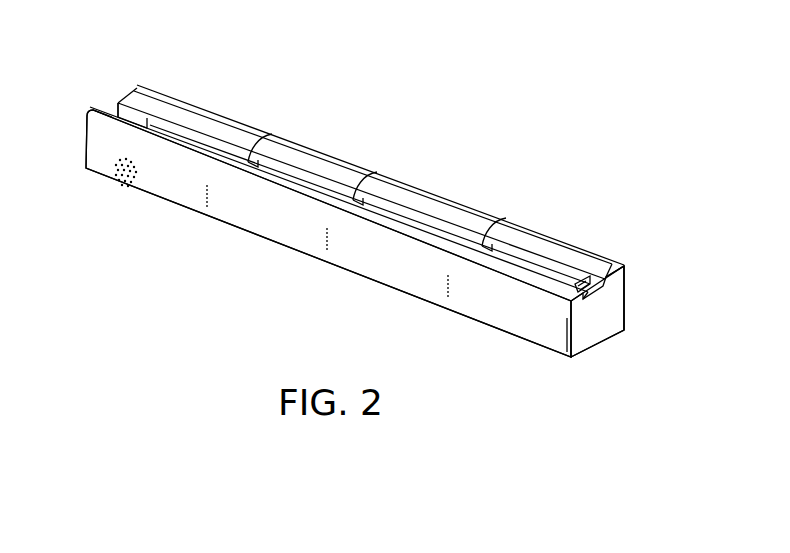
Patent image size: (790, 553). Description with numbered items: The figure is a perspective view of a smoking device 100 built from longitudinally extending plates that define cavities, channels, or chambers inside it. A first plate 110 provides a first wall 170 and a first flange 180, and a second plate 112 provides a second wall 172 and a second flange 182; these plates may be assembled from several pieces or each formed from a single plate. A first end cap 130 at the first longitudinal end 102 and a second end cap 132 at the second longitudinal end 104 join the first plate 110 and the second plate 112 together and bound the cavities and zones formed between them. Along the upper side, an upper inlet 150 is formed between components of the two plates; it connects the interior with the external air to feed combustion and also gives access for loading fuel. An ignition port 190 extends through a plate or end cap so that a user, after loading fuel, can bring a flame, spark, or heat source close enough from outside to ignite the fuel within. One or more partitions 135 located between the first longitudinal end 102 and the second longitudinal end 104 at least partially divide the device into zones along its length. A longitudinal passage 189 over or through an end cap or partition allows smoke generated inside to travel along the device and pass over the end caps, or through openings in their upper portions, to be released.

The smoking device 100 is at (327, 66).
The first longitudinal end 102 is at (120, 101).
The second longitudinal end 104 is at (618, 266).
The first plate 110 is at (357, 275).
The second plate 112 is at (428, 196).
The first end cap 130 is at (112, 108).
The second end cap 132 is at (612, 312).
The partitions 135 is at (266, 137).
The upper inlet 150 is at (532, 246).
The first wall 170 is at (513, 322).
The second wall 172 is at (628, 283).
The first flange 180 is at (158, 131).
The second flange 182 is at (203, 106).
The longitudinal passage 189 is at (610, 262).
The ignition port 190 is at (121, 188).